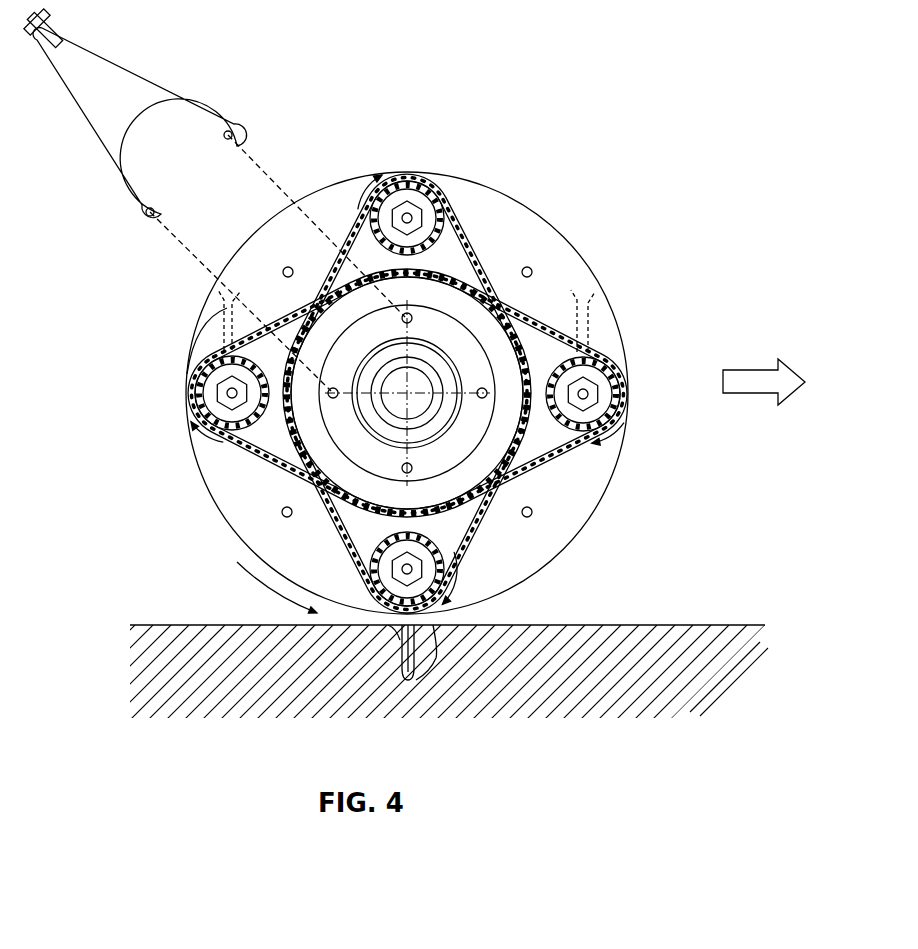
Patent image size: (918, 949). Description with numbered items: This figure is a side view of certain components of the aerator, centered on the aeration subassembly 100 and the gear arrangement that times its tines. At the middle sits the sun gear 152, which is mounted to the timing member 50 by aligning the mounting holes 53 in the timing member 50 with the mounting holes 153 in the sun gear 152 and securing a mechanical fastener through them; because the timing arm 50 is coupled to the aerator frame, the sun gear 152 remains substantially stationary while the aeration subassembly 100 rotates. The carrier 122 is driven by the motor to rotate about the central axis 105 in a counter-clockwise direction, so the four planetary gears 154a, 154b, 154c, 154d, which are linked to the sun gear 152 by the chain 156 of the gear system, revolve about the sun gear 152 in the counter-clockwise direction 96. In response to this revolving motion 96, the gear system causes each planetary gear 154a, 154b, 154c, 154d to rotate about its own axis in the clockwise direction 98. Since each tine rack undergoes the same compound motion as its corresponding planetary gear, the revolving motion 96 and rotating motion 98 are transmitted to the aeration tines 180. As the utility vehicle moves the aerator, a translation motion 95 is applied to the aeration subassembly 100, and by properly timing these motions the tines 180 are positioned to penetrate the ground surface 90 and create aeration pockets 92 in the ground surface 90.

The timing member 50 is at (84, 46).
The mounting holes 53 is at (220, 124).
The ground surface 90 is at (712, 622).
The aeration pockets 92 is at (424, 658).
The translation motion 95 is at (737, 372).
The counter-clockwise direction 96 is at (245, 577).
The clockwise direction 98 is at (453, 592).
The aeration subassembly 100 is at (182, 298).
The central axis 105 is at (410, 398).
The carrier 122 is at (592, 263).
The sun gear 152 is at (262, 440).
The mounting holes 153 is at (330, 388).
The planetary gear 154a is at (443, 556).
The planetary gear 154b is at (186, 375).
The planetary gear 154c is at (410, 190).
The planetary gear 154d is at (606, 380).
The chain 156 is at (333, 521).
The aeration tines 180 is at (450, 194).